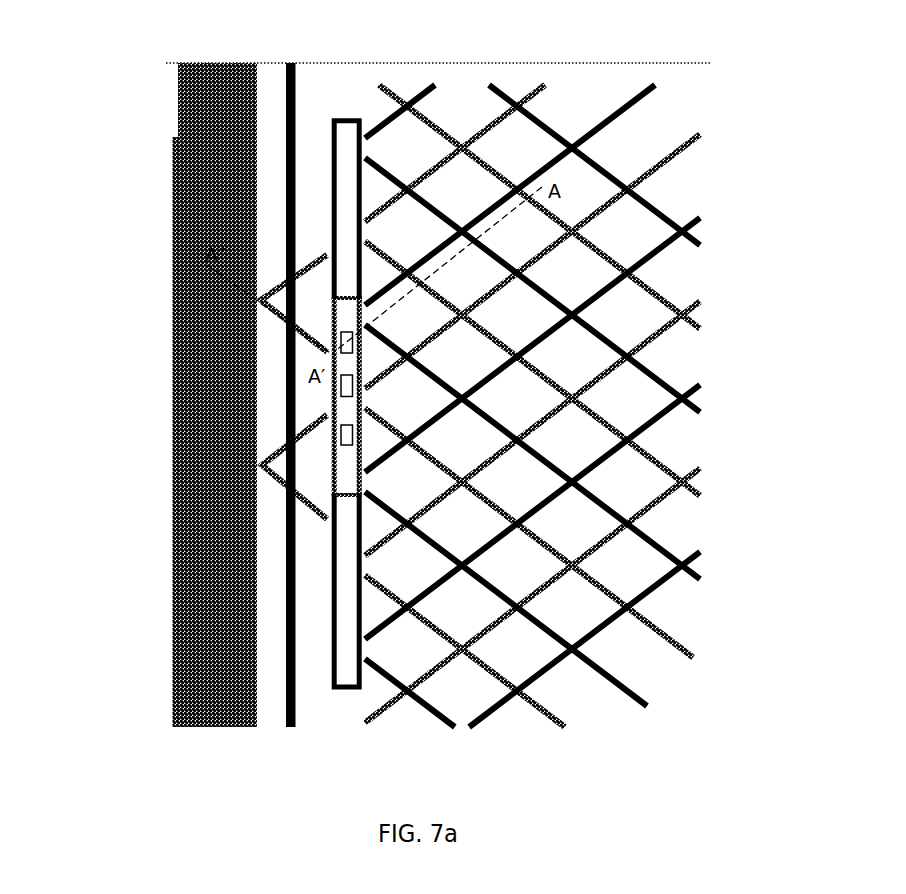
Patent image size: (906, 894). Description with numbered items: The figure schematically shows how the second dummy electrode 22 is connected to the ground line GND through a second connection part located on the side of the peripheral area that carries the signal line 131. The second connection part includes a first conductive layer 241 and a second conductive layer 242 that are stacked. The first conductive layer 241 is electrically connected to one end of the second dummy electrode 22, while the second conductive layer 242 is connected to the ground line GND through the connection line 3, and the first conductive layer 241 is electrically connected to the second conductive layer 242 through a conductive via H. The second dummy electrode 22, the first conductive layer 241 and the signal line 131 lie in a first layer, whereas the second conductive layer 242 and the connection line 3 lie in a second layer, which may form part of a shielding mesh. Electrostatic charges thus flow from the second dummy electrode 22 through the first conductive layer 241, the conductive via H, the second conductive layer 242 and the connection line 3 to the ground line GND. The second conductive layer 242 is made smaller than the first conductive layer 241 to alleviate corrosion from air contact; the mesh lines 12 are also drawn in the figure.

The signal line 131 is at (302, 93).
The second dummy electrode 22 is at (627, 103).
The second mesh electrode lines 12 is at (668, 638).
The connection line 3 is at (277, 484).
The first conductive layer 241 is at (342, 690).
The second conductive layer 242 is at (338, 497).
The conductive via H is at (341, 384).
The ground line GND is at (178, 233).